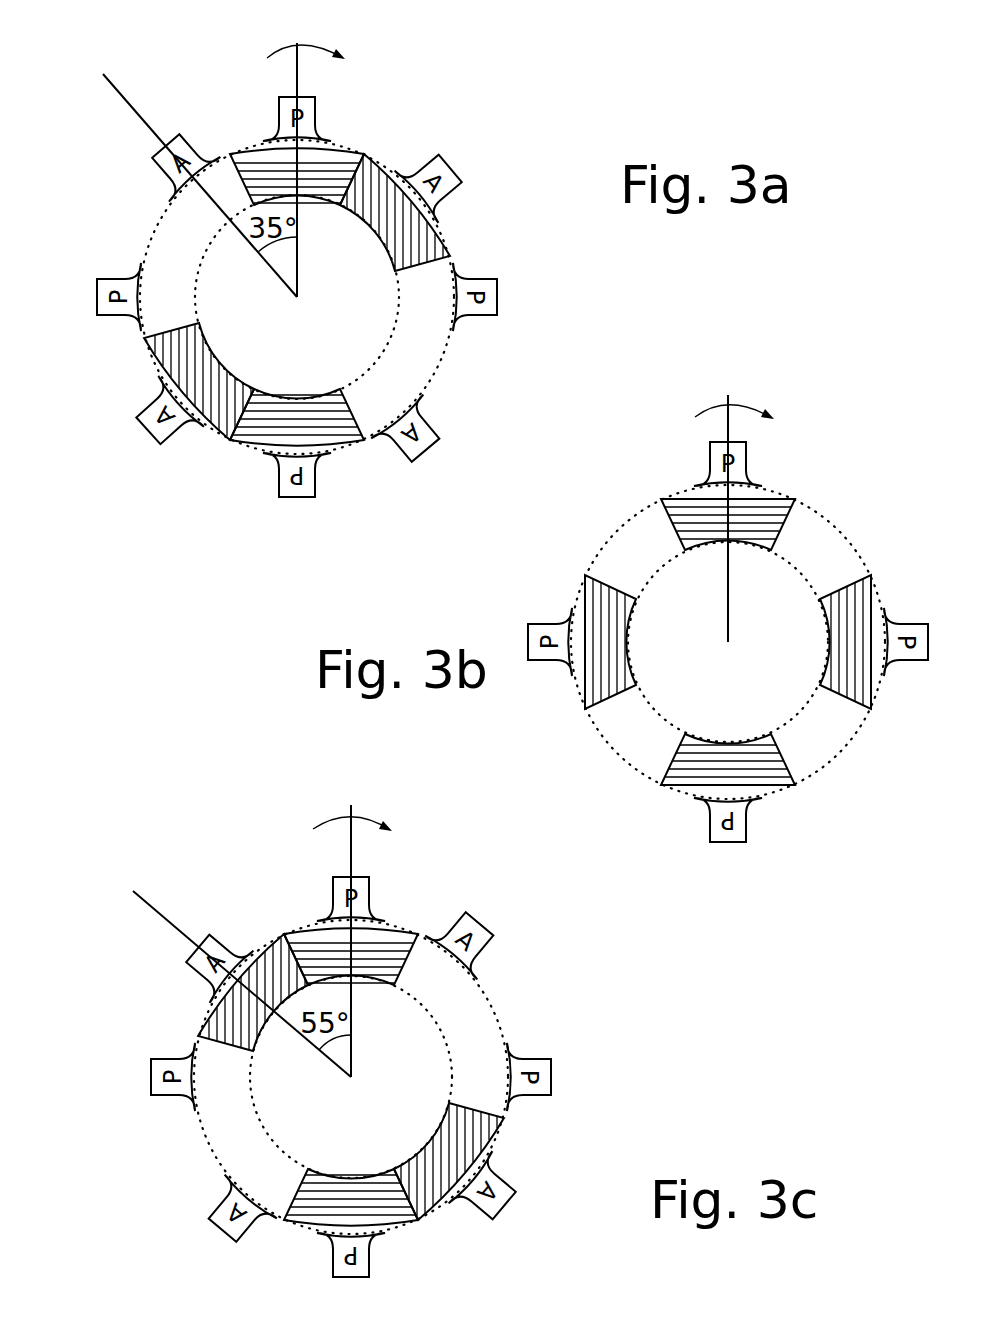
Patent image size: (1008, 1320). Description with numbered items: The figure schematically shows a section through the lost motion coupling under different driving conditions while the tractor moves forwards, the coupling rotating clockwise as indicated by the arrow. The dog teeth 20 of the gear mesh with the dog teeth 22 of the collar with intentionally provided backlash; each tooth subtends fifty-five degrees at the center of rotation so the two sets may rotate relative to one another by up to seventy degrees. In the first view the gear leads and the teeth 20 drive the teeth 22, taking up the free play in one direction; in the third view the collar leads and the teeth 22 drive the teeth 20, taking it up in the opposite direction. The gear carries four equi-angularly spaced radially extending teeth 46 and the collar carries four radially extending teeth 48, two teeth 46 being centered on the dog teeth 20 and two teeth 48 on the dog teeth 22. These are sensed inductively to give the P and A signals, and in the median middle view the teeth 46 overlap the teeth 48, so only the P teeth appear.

In FIG. 3A, the teeth 20 is at (348, 158).
In FIG. 3B, the teeth 20 is at (770, 503).
In FIG. 3C, the teeth 20 is at (315, 943).
In FIG. 3A, the teeth 22 is at (422, 236).
In FIG. 3B, the teeth 22 is at (862, 602).
In FIG. 3C, the teeth 22 is at (220, 1022).
In FIG. 3A, the radially extending teeth 46 is at (318, 128).
In FIG. 3B, the radially extending teeth 46 is at (745, 833).
In FIG. 3C, the radially extending teeth 46 is at (372, 908).
In FIG. 3A, the radially extending teeth 48 is at (180, 147).
In FIG. 3C, the radially extending teeth 48 is at (483, 937).